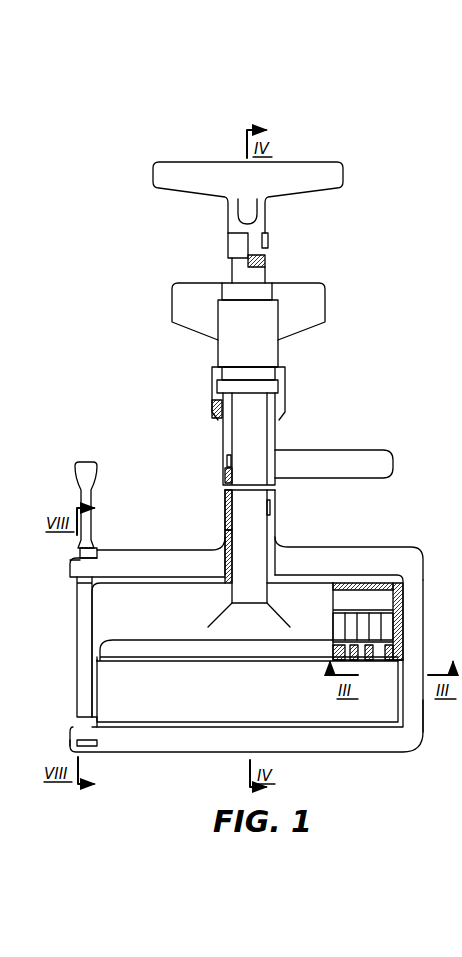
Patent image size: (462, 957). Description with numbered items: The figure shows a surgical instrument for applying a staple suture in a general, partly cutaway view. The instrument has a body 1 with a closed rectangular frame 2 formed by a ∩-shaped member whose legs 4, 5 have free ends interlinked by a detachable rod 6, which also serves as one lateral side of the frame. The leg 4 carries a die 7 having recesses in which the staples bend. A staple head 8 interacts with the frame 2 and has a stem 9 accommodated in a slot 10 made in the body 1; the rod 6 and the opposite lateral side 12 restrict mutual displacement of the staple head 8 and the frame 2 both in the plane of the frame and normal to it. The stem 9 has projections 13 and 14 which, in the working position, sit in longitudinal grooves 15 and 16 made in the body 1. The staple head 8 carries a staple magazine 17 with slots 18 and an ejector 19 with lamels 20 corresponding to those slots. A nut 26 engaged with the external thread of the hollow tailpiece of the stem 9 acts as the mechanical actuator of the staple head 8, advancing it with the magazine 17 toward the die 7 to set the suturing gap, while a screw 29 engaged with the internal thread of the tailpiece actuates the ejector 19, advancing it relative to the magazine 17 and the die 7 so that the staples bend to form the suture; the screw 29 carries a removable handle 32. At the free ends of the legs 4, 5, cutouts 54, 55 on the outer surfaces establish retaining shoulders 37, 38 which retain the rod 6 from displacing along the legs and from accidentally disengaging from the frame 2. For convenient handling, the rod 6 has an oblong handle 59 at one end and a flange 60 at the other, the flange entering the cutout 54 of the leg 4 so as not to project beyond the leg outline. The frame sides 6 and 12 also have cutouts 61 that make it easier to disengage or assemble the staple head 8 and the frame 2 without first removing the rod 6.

The body 1 is at (277, 526).
The closed rectangular frame 2 is at (330, 547).
The leg 4 is at (165, 745).
The leg 5 is at (170, 552).
The detachable rod 6 is at (78, 694).
The die 7 is at (196, 728).
The staple head 8 is at (207, 638).
The stem 9 is at (272, 494).
The slot 10 is at (261, 440).
The lateral side 12 is at (419, 712).
The projection 13 is at (226, 511).
The projection 14 is at (222, 404).
The longitudinal groove 15 is at (226, 534).
The longitudinal groove 16 is at (223, 432).
The staple magazine 17 is at (157, 660).
The slots 18 is at (375, 662).
The ejector 19 is at (385, 600).
The lamels 20 is at (378, 628).
The nut 26 is at (320, 309).
The screw 29 is at (256, 272).
The removable handle 32 is at (318, 183).
The shoulder 37 is at (73, 746).
The shoulder 38 is at (74, 558).
The cutout 54 is at (84, 748).
The cutout 55 is at (92, 548).
The oblong handle 59 is at (88, 492).
The flange 60 is at (96, 752).
The cutouts 61 is at (101, 661).